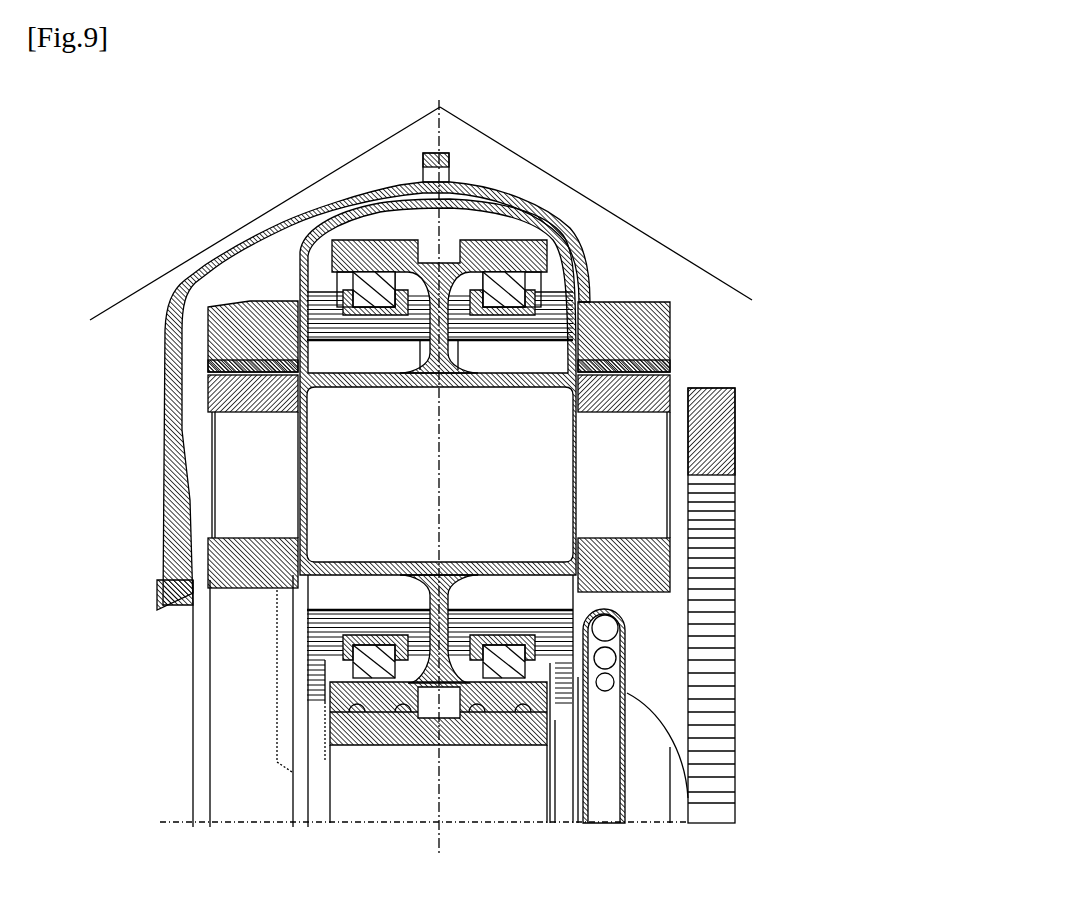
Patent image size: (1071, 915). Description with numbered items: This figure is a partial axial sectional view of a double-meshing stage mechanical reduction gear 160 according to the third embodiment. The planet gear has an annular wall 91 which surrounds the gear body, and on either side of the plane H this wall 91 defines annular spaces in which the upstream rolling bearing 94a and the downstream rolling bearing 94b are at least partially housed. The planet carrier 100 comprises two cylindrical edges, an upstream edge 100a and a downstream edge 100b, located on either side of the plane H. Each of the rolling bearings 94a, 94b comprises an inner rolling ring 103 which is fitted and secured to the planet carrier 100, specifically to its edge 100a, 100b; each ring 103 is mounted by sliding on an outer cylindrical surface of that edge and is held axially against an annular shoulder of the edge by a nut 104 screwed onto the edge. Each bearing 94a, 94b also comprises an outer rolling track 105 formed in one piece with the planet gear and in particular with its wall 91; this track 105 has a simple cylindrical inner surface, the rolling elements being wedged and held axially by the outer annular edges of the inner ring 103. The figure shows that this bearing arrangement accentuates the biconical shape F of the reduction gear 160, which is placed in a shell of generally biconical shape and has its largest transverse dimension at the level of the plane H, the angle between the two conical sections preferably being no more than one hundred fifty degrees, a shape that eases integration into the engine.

The annular wall 91 is at (483, 240).
The upstream rolling bearing 94a is at (303, 292).
The downstream rolling bearing 94b is at (558, 280).
The planet carrier 100 is at (419, 446).
The upstream cylindrical edge 100a is at (380, 330).
The downstream cylindrical edge 100b is at (628, 362).
The inner rolling ring 103 is at (350, 310).
The nut 104 is at (460, 310).
The outer rolling track 105 is at (323, 213).
The reduction gear 160 is at (782, 727).
The biconical shape F is at (383, 143).
The plane H is at (440, 770).